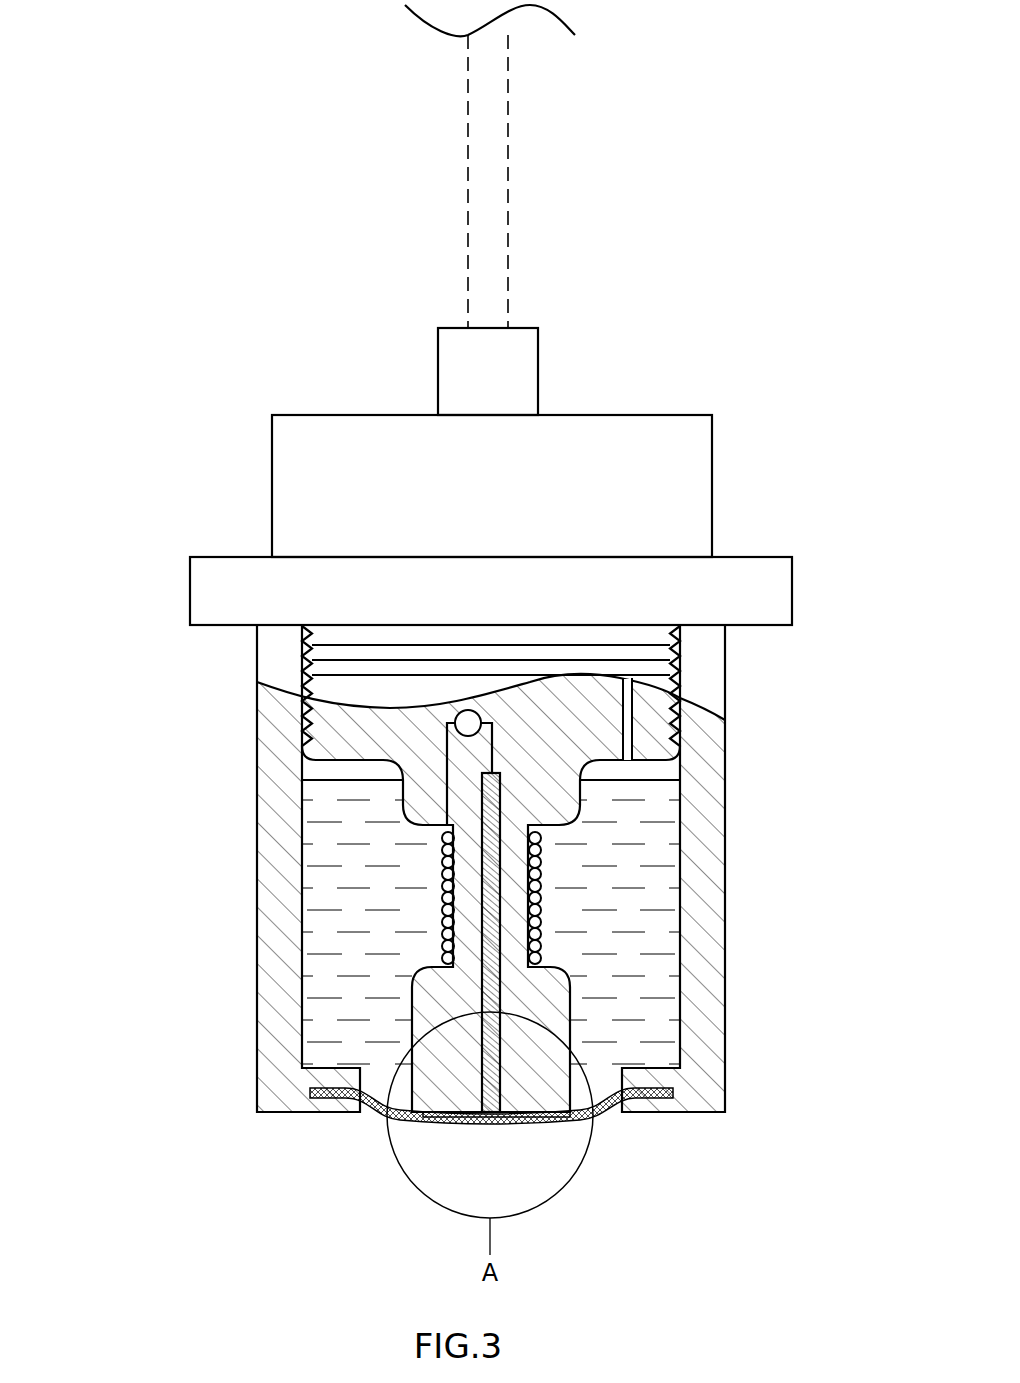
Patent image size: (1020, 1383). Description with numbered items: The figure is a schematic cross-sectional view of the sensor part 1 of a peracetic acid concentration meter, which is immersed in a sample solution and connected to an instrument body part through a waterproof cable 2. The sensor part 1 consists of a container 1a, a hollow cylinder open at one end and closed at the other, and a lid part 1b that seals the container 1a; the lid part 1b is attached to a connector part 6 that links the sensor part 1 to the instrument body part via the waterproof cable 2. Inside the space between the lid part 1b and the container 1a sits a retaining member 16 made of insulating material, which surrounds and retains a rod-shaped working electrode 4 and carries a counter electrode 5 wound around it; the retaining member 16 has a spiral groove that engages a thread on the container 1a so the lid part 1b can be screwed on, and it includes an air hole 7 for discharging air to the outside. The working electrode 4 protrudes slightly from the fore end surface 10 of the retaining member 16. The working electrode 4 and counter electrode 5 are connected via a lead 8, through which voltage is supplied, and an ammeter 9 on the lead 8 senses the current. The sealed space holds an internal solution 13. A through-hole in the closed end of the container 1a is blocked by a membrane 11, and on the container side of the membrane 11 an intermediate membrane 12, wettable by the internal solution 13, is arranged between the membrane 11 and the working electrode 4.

The sensor part 1 is at (747, 166).
The container 1a is at (253, 1118).
The lid part 1b is at (187, 629).
The waterproof cable 2 is at (468, 208).
The working electrode 4 is at (479, 1097).
The counter electrode 5 is at (545, 900).
The connector part 6 is at (538, 372).
The air hole 7 is at (632, 728).
The lead 8 is at (491, 773).
The ammeter 9 is at (460, 710).
The fore end surface 10 is at (543, 1114).
The membrane 11 is at (372, 1103).
The intermediate membrane 12 is at (500, 1114).
The internal solution 13 is at (638, 960).
The retaining member 16 is at (325, 782).